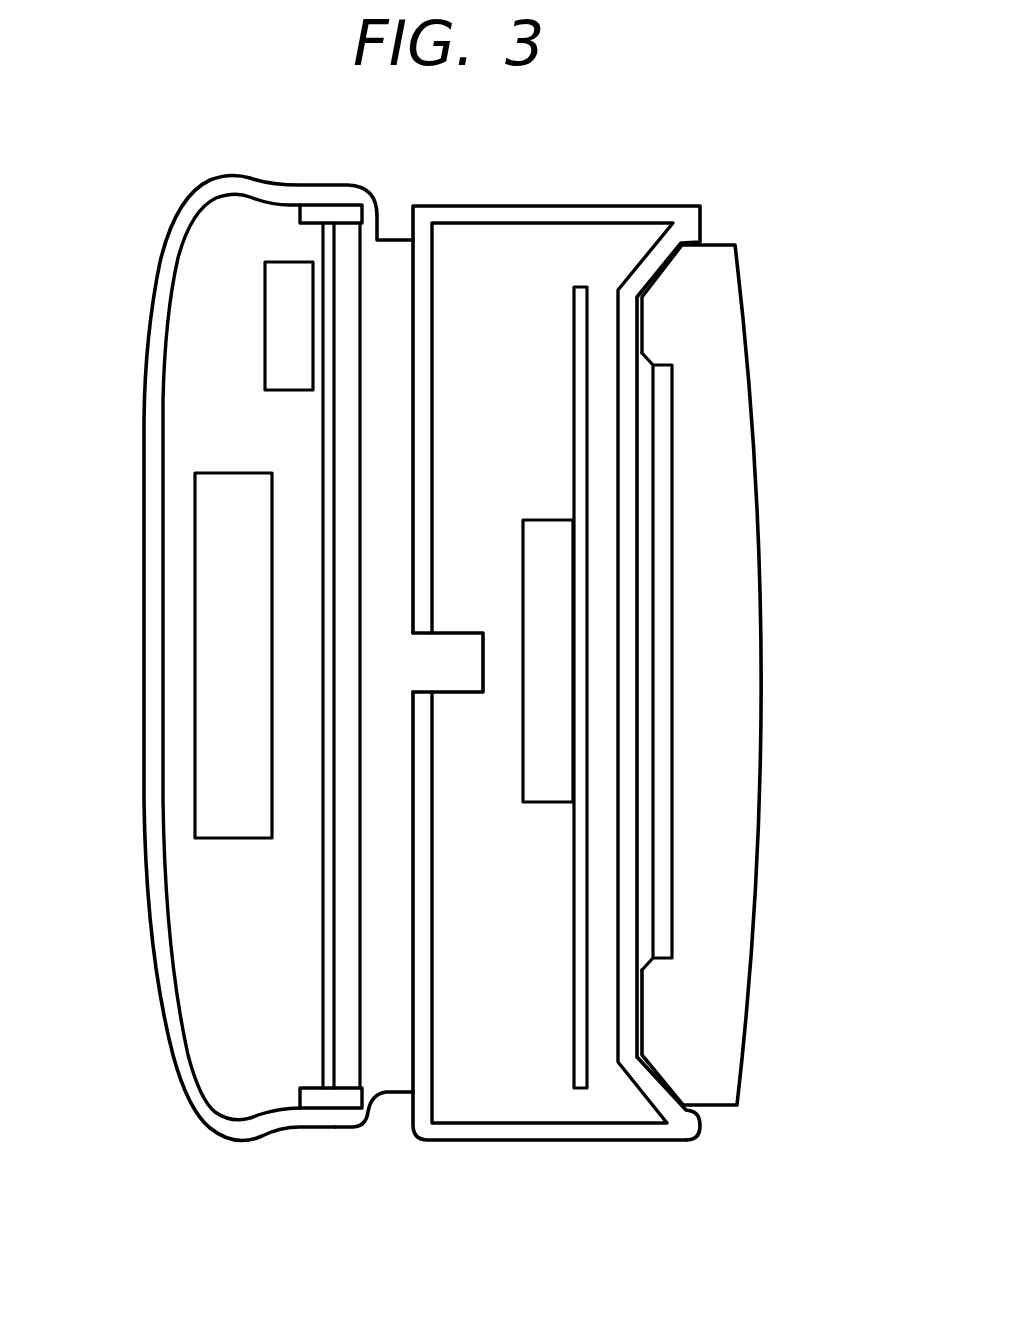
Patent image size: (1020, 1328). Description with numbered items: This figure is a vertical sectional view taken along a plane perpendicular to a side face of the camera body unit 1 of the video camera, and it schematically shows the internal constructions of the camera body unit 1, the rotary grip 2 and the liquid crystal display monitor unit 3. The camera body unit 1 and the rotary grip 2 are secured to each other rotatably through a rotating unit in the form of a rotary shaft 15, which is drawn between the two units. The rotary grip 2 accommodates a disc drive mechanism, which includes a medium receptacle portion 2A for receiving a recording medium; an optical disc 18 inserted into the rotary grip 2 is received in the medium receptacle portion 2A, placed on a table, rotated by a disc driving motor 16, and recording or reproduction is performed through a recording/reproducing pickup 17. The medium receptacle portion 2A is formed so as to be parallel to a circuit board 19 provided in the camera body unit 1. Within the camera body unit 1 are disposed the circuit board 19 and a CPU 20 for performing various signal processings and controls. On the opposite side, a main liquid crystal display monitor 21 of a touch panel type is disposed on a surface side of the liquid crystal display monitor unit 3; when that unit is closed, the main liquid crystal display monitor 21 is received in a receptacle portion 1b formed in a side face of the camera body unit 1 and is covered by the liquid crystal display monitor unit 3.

The camera body unit 1 is at (519, 216).
The receptacle portion 1b is at (664, 1078).
The rotary grip 2 is at (148, 467).
The medium receptacle portion 2A is at (307, 1060).
The liquid crystal display monitor unit 3 is at (752, 642).
The rotary shaft 15 is at (437, 665).
The disc driving motor 16 is at (220, 802).
The recording/reproducing pickup 17 is at (290, 333).
The optical disc 18 is at (328, 303).
The circuit board 19 is at (580, 1060).
The CPU 20 is at (543, 770).
The main liquid crystal display monitor 21 is at (655, 420).